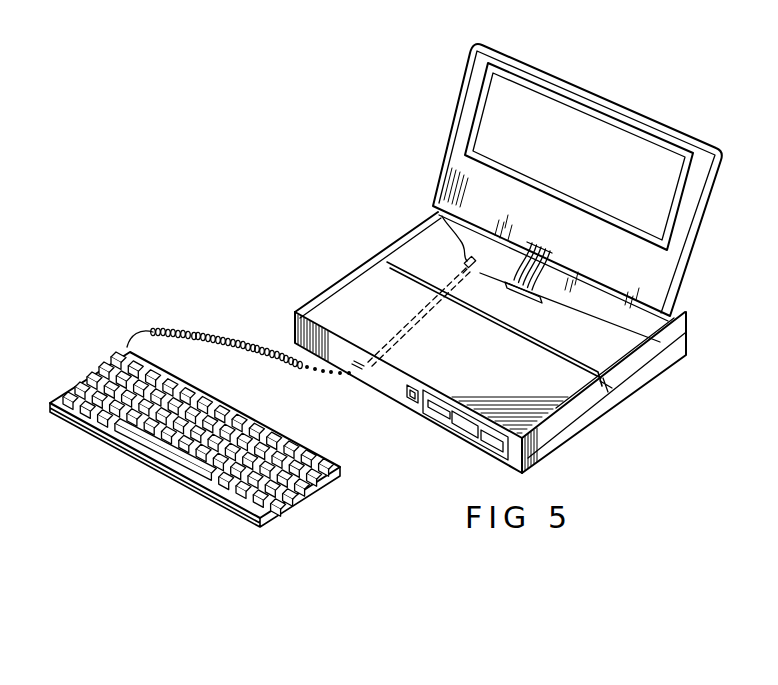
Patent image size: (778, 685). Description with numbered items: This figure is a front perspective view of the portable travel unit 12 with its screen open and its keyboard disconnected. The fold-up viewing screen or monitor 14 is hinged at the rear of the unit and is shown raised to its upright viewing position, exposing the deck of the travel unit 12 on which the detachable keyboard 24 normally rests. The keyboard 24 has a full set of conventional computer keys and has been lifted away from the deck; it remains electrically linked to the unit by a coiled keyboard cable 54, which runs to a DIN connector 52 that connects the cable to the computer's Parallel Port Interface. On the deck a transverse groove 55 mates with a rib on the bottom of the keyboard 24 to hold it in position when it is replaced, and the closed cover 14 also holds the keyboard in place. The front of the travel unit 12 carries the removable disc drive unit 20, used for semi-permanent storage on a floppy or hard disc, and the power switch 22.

The travel unit 12 is at (358, 266).
The fold-up viewing screen or monitor 14 is at (458, 113).
The removable disc drive unit 20 is at (462, 441).
The power switch 22 is at (412, 404).
The detachable keyboard 24 is at (98, 369).
The DIN connector 52 is at (442, 220).
The coiled keyboard cable 54 is at (256, 344).
The transverse groove 55 is at (605, 383).